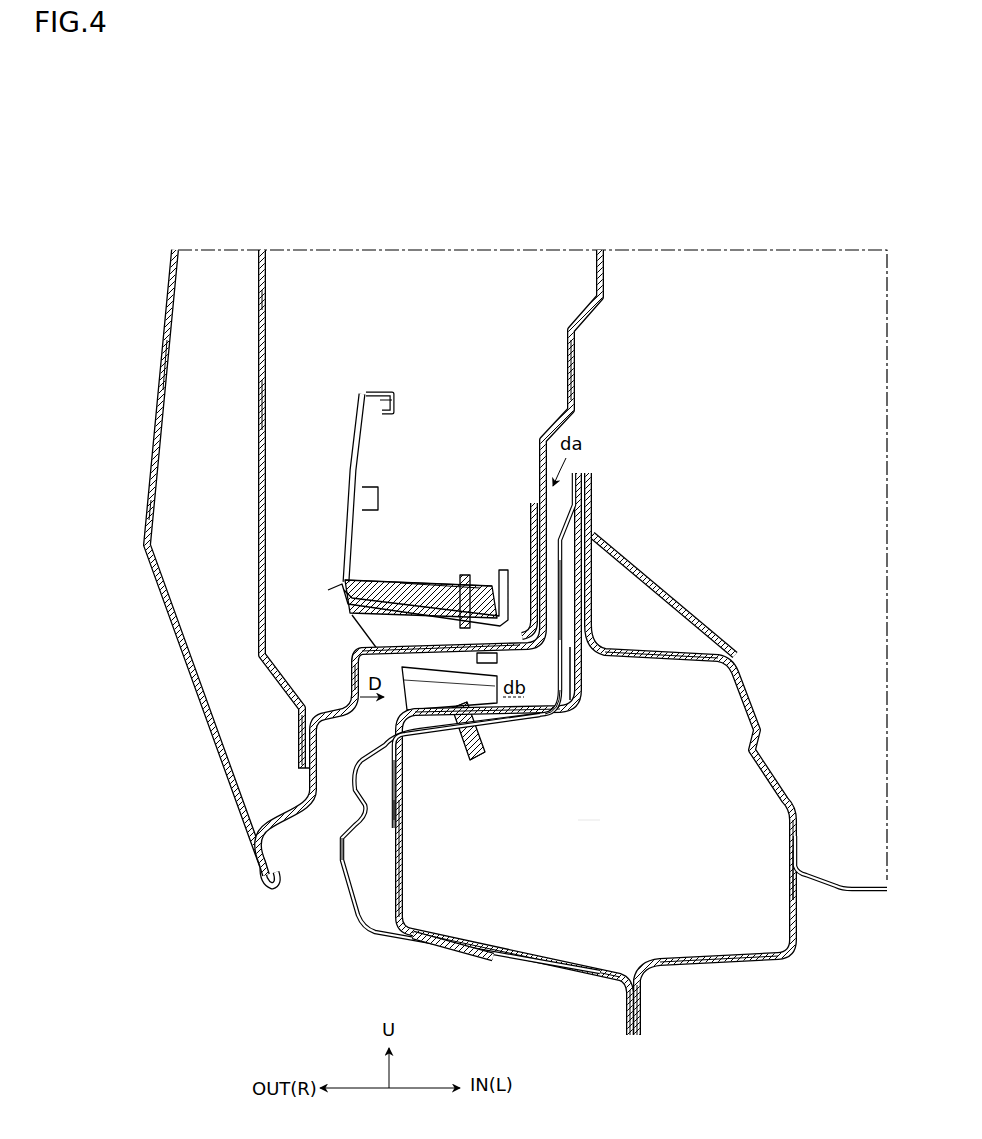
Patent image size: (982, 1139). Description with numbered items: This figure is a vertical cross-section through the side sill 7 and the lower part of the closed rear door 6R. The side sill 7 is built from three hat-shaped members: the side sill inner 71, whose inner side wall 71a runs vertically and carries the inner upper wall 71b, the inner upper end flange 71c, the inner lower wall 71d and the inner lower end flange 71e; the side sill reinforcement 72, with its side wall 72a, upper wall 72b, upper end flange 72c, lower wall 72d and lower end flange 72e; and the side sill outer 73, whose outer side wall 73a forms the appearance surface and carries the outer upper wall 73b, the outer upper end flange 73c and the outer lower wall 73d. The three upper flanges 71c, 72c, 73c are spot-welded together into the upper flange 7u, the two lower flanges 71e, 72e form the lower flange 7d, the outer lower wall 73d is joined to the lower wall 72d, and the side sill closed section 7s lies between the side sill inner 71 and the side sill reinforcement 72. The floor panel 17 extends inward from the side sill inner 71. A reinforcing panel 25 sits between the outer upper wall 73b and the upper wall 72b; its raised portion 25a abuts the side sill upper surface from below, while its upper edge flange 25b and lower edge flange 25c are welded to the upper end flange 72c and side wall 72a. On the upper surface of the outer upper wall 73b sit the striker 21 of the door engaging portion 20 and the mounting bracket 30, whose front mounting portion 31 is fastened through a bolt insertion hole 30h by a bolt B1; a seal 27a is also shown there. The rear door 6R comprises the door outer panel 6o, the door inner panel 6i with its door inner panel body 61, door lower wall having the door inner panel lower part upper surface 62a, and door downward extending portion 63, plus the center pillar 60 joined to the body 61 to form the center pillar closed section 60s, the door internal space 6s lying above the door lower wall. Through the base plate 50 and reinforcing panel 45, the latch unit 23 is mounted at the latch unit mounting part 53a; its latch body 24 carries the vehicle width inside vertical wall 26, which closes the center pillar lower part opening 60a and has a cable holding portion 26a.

The rear door 6R is at (136, 319).
The door outer panel 6o is at (154, 384).
The door internal space 6s is at (218, 516).
The center pillar 60 is at (256, 320).
The center pillar lower part opening 60a is at (260, 406).
The center pillar closed section 60s is at (406, 306).
The door inner panel body 61 is at (566, 381).
The door inner panel 6i is at (580, 368).
The door inner panel lower part upper surface 62a is at (350, 655).
The door downward extending portion 63 is at (298, 740).
The rear door side reinforcing panel 45 is at (528, 515).
The vehicle width inside vertical wall 26 is at (362, 410).
The cable holding portion 26a is at (395, 413).
The door engaging portion 20 is at (468, 436).
The latch unit 23 is at (428, 530).
The latch body 24 is at (426, 580).
The latch unit mounting part 53a is at (402, 578).
The base plate 50 is at (328, 598).
The mounting bracket 30 is at (400, 708).
The bolt insertion hole 30h is at (478, 748).
The front mounting portion 31 is at (462, 745).
The bolt B1 is at (462, 724).
The striker 21 is at (490, 660).
The seal 27a is at (569, 662).
The upper flange 7u is at (600, 507).
The side sill 7 is at (771, 996).
The lower flange 7d is at (657, 1010).
The side sill closed section 7s is at (590, 816).
The side sill inner 71 is at (774, 952).
The inner side wall 71a is at (796, 818).
The inner upper wall 71b is at (655, 654).
The inner upper end flange 71c is at (594, 485).
The inner lower wall 71d is at (714, 958).
The inner lower end flange 71e is at (644, 1030).
The side sill reinforcement 72 is at (536, 946).
The side wall 72a is at (404, 841).
The upper wall 72b is at (520, 728).
The upper end flange 72c is at (588, 476).
The lower wall 72d is at (553, 966).
The lower end flange 72e is at (626, 1030).
The side sill outer 73 is at (365, 942).
The outer side wall 73a is at (346, 906).
The outer upper wall 73b is at (584, 705).
The outer upper end flange 73c is at (578, 474).
The outer lower wall 73d is at (435, 952).
The reinforcing panel 25 is at (555, 720).
The raised portion 25a is at (417, 750).
The upper edge flange 25b is at (566, 640).
The lower edge flange 25c is at (390, 828).
The floor panel 17 is at (866, 894).